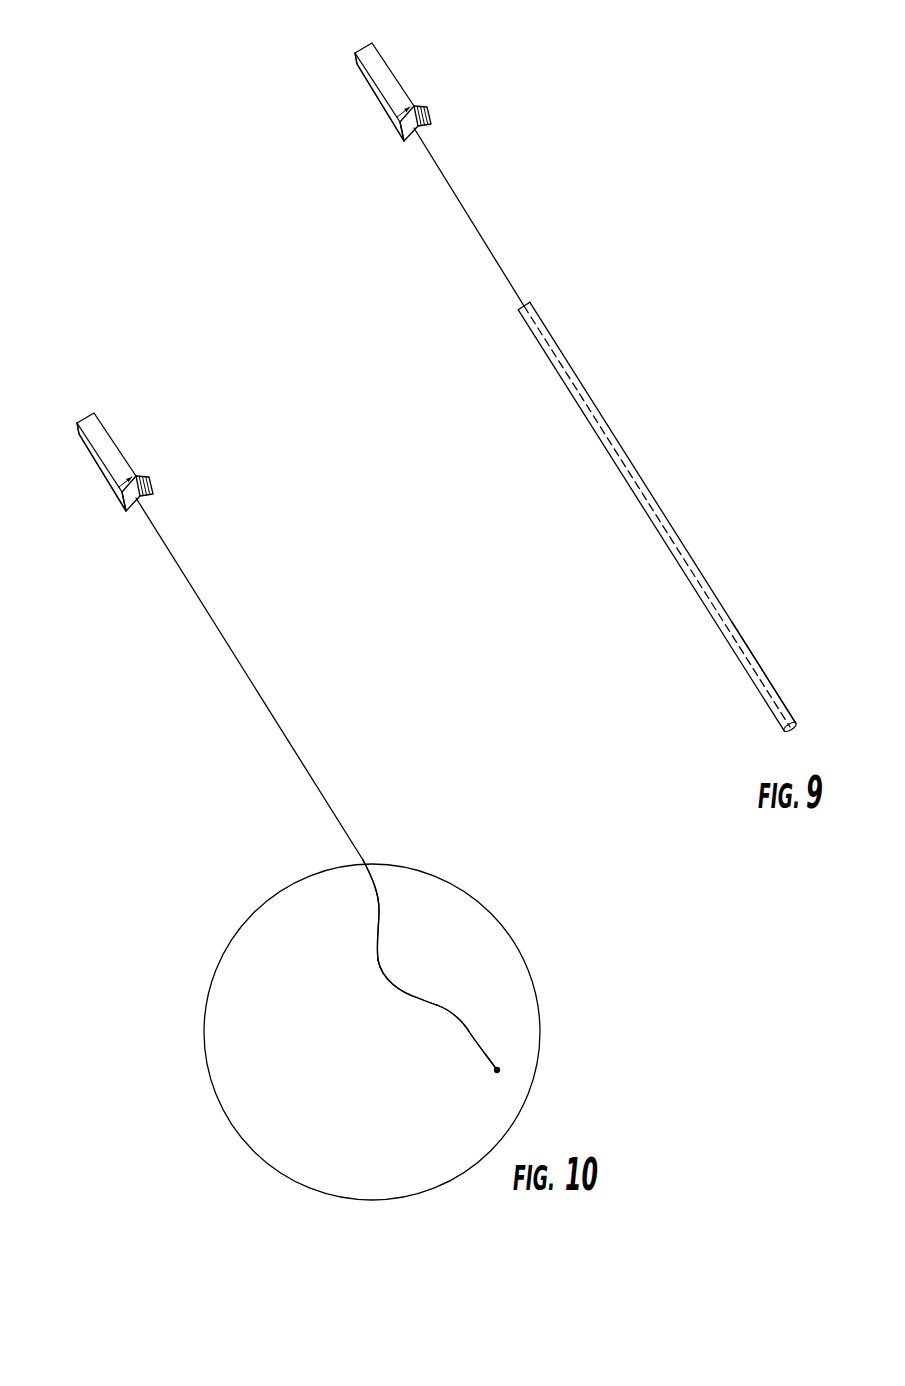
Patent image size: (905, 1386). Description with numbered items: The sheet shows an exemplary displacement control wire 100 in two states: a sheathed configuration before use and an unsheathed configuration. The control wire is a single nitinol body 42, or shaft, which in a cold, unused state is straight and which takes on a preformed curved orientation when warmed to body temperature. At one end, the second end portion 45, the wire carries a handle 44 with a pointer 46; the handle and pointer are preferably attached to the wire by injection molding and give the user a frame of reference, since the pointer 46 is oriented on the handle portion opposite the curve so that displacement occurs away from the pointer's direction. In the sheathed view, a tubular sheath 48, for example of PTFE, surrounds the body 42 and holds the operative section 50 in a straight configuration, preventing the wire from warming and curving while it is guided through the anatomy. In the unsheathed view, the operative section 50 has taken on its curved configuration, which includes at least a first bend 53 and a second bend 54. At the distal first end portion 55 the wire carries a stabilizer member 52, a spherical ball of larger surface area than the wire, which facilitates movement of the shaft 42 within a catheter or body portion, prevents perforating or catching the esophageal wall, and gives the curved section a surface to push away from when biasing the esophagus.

In FIG. 9, the displacement control wire 100 is at (581, 88).
In FIG. 9, the nitinol body 42 is at (415, 145).
In FIG. 10, the nitinol body 42 is at (225, 643).
In FIG. 9, the handle 44 is at (390, 70).
In FIG. 10, the handle 44 is at (111, 438).
In FIG. 9, the second end portion 45 is at (372, 92).
In FIG. 10, the second end portion 45 is at (108, 480).
In FIG. 9, the pointer 46 is at (447, 119).
In FIG. 10, the pointer 46 is at (165, 490).
In FIG. 9, the tubular sheath 48 is at (545, 321).
In FIG. 9, the operative section 50 is at (738, 638).
In FIG. 10, the operative section 50 is at (393, 988).
In FIG. 10, the stabilizer member 52 is at (496, 1073).
In FIG. 10, the first bend 53 is at (380, 922).
In FIG. 10, the second bend 54 is at (437, 1005).
In FIG. 10, the first end portion 55 is at (480, 1045).